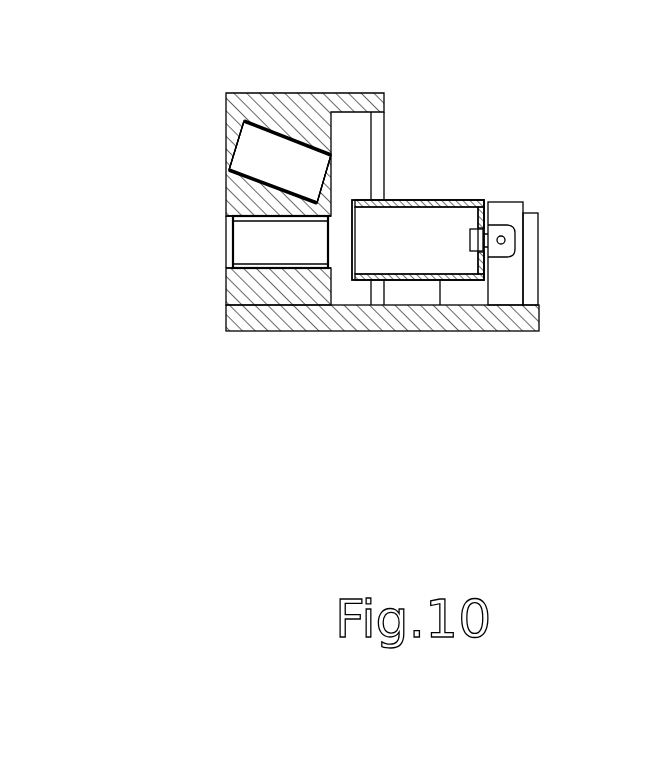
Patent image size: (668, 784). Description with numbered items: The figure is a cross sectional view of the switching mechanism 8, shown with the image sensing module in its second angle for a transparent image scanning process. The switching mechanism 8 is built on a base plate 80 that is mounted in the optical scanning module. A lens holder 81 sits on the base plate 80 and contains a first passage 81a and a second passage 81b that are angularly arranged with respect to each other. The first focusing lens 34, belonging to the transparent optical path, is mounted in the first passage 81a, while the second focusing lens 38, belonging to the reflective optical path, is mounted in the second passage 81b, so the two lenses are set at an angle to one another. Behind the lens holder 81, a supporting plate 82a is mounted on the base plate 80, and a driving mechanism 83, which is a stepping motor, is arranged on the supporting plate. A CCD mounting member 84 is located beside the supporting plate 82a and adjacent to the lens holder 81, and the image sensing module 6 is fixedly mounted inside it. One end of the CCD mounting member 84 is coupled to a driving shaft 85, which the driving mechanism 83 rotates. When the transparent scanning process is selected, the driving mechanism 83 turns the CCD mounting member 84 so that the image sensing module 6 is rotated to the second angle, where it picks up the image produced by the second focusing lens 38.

The switching mechanism 8 is at (527, 126).
The base plate 80 is at (423, 324).
The lens holder 81 is at (315, 95).
The first passage 81a is at (226, 128).
The second passage 81b is at (226, 222).
The first focusing lens 34 is at (238, 157).
The second focusing lens 38 is at (238, 259).
The CCD mounting member 84 is at (407, 203).
The image sensing module 6 is at (470, 238).
The supporting plate 82a is at (513, 292).
The driving mechanism 83 is at (533, 218).
The driving shaft 85 is at (503, 240).